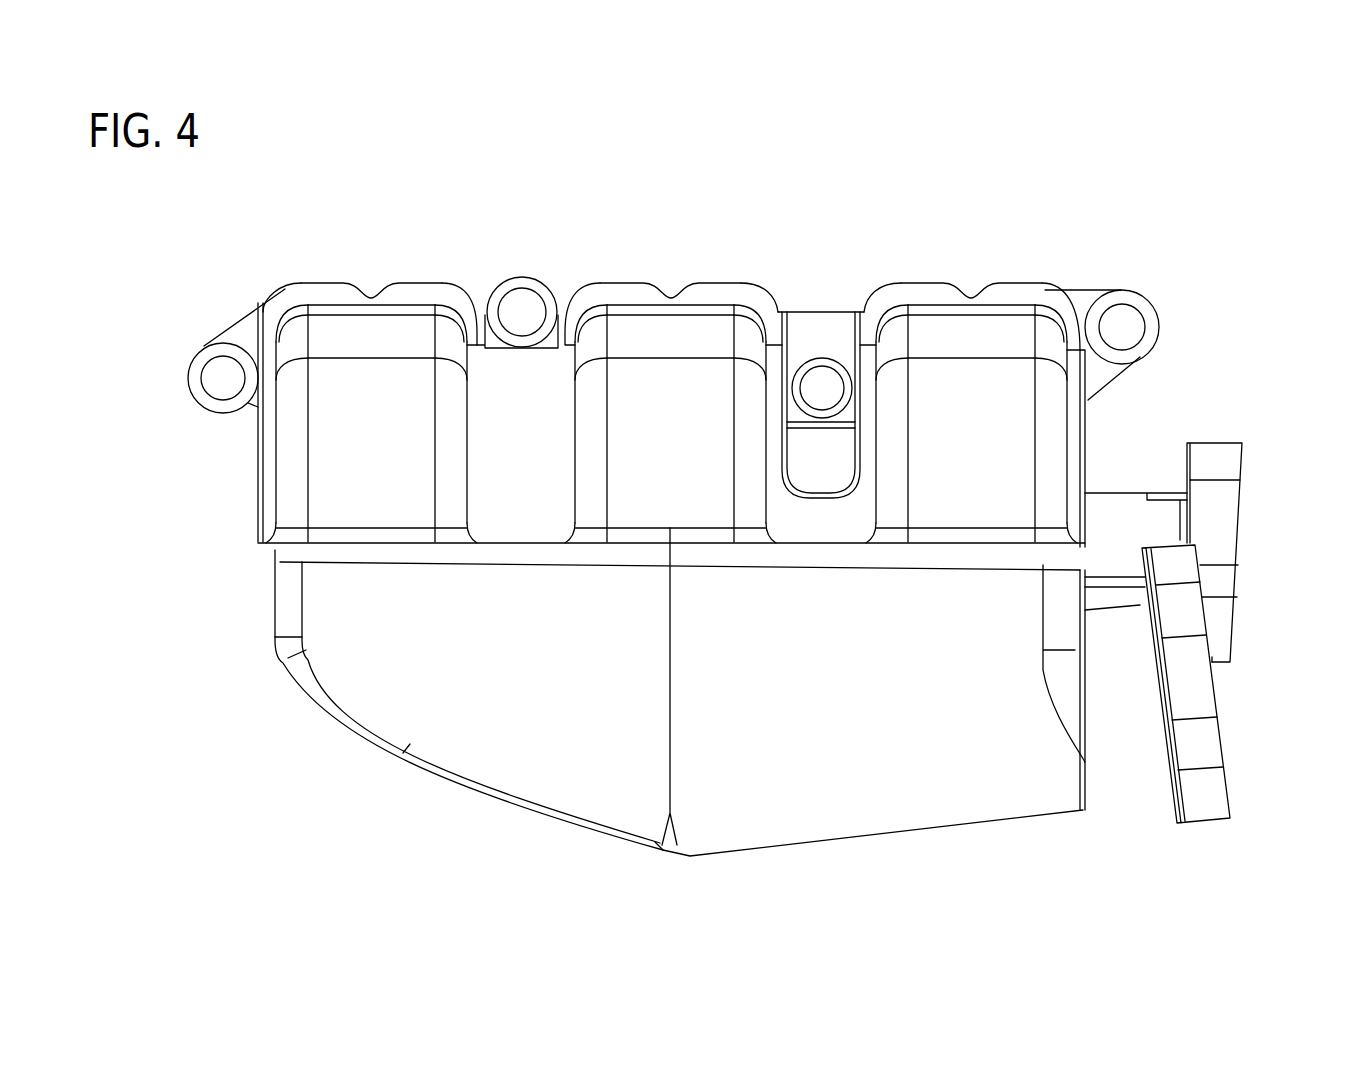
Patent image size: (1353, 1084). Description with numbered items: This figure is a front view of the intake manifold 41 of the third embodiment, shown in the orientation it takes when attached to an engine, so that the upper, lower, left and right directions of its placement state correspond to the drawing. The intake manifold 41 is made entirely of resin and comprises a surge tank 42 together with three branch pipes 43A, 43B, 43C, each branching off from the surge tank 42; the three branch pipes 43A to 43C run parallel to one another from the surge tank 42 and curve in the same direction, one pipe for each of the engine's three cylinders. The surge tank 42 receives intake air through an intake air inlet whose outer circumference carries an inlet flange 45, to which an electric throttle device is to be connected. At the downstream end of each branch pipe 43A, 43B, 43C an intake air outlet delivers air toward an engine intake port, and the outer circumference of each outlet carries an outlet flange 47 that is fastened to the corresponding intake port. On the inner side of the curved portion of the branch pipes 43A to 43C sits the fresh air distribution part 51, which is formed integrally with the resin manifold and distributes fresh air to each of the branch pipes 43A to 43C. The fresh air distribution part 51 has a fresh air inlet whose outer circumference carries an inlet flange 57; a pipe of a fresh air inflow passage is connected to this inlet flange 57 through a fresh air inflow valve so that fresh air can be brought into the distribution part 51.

The intake manifold 41 is at (1152, 262).
The surge tank 42 is at (875, 823).
The branch pipe 43A is at (969, 385).
The branch pipe 43B is at (666, 385).
The branch pipe 43C is at (381, 385).
The inlet flange 45 is at (1198, 745).
The outlet flange 47 is at (1078, 300).
The fresh air distribution part 51 is at (1117, 503).
The inlet flange 57 is at (1220, 630).